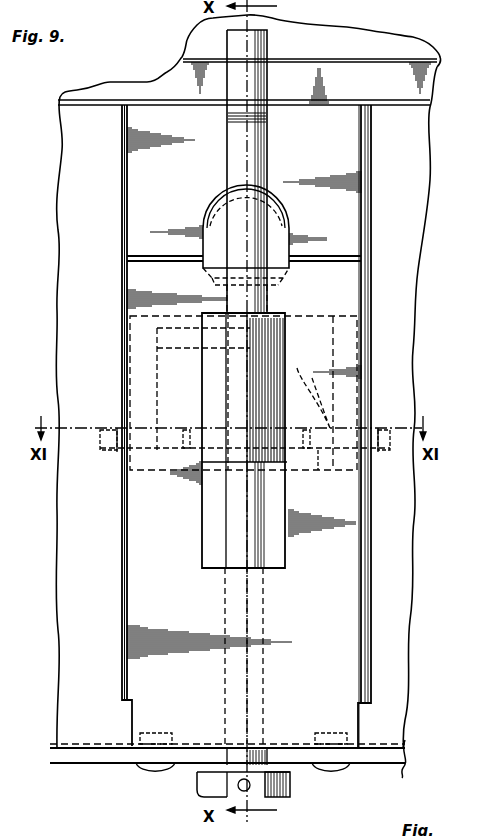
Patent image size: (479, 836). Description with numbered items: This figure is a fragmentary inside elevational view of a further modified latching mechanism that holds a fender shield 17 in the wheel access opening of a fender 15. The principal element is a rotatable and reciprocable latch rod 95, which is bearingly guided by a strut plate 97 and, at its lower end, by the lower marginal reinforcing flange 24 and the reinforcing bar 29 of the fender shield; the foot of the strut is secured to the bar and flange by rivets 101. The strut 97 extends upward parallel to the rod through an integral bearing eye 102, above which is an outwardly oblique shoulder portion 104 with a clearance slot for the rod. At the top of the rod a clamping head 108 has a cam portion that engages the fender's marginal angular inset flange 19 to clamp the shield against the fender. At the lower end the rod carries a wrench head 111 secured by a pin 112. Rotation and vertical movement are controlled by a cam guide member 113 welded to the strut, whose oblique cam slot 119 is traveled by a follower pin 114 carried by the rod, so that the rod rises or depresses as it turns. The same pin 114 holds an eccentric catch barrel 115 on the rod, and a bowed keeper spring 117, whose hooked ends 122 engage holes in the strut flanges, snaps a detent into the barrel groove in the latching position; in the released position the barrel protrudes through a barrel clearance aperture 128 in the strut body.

The fender 15 is at (408, 42).
The marginal angular inset flange 19 is at (432, 94).
The clamping head 108 is at (238, 100).
The latch rod 95 is at (230, 221).
The shoulder portion 104 is at (353, 218).
The strut plate 97 is at (347, 620).
The bearing eye 102 is at (280, 279).
The cam guide member 113 is at (315, 313).
The fender shield 17 is at (414, 331).
The cam slot 119 is at (313, 364).
The follower pin 114 is at (176, 350).
The catch barrel 115 is at (216, 407).
The hooked ends 122 is at (103, 452).
The keeper spring 117 is at (322, 470).
The barrel clearance aperture 128 is at (288, 551).
The rivets 101 is at (327, 734).
The reinforcing bar 29 is at (402, 757).
The lower marginal reinforcing flange 24 is at (414, 768).
The wrench head 111 is at (290, 784).
The pin 112 is at (249, 790).